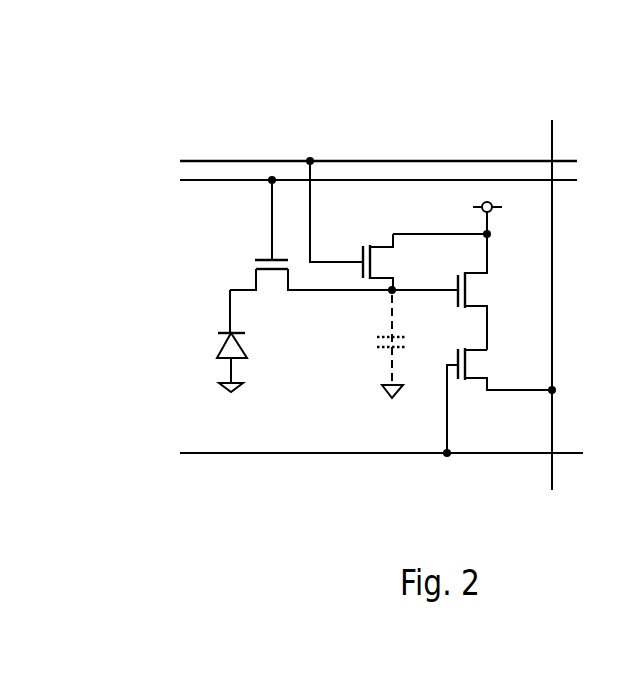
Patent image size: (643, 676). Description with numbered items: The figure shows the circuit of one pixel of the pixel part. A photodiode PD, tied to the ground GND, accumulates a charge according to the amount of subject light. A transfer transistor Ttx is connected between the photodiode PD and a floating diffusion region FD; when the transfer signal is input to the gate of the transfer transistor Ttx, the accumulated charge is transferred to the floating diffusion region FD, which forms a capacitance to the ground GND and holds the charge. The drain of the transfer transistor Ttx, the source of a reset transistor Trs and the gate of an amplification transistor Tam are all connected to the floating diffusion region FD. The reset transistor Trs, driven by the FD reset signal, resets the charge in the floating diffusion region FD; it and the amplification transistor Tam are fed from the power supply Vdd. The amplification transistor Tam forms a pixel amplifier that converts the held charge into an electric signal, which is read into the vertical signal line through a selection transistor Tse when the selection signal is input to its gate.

The transfer transistor Ttx is at (297, 272).
The photodiode PD is at (253, 336).
The ground GND is at (249, 402).
The reset transistor Trs is at (365, 253).
The power supply Vdd is at (447, 216).
The floating diffusion region FD is at (417, 342).
The amplification transistor Tam is at (495, 292).
The selection transistor Tse is at (505, 369).